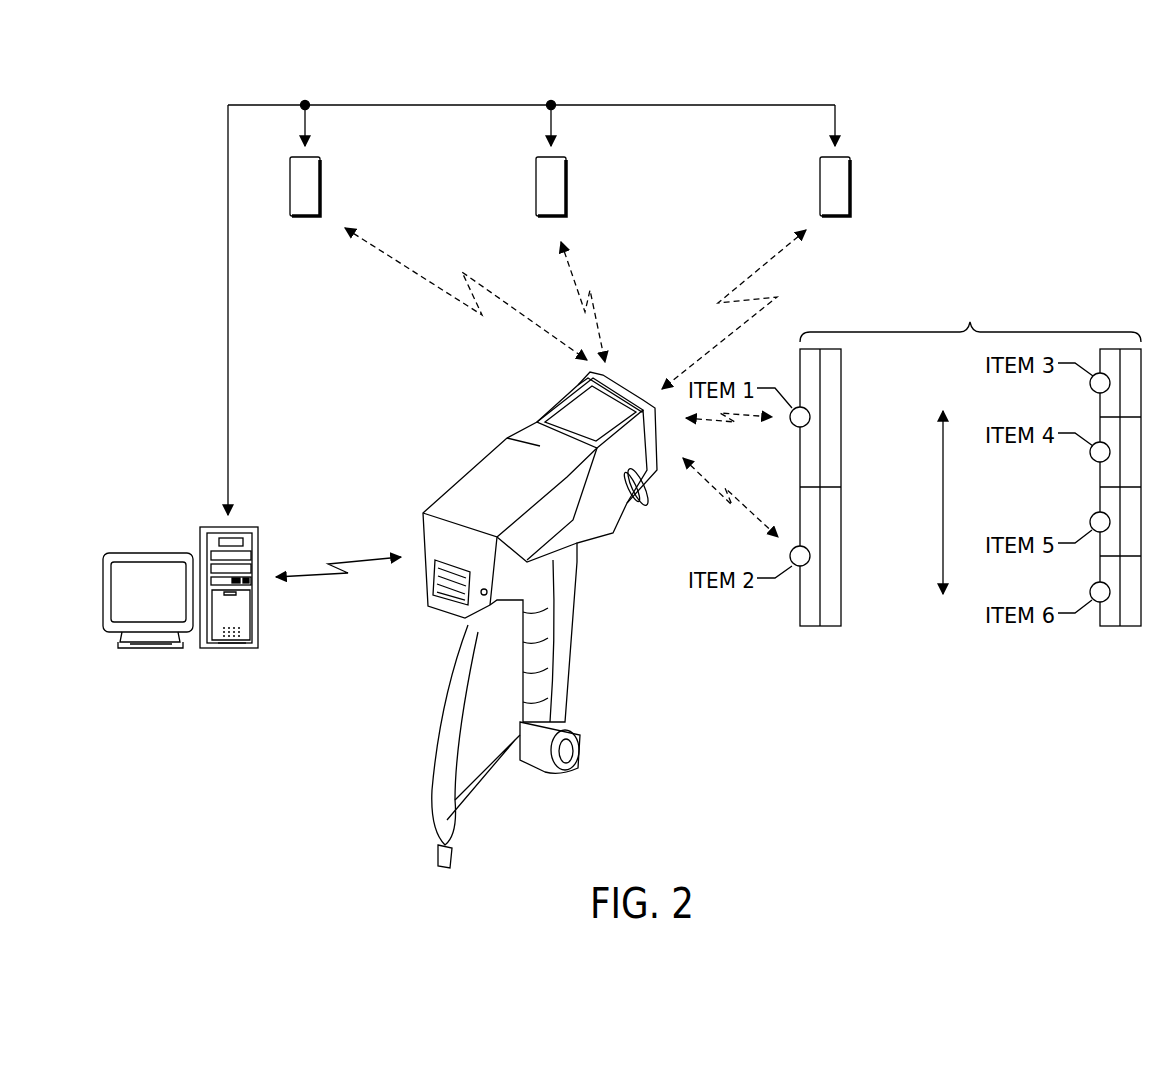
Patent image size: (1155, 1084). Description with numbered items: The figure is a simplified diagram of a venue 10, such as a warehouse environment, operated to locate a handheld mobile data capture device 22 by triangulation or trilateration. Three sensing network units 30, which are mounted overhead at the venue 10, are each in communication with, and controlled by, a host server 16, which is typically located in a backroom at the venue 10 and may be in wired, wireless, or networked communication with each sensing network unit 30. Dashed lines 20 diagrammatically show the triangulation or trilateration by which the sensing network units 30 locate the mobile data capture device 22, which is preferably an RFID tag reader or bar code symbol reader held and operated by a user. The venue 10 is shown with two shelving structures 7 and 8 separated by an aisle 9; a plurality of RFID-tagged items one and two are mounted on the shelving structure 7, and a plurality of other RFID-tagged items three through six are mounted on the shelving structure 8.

The sensing network unit 30 is at (290, 188).
The dashed lines 20 is at (405, 272).
The mobile data capture device 22 is at (618, 536).
The host server 16 is at (298, 683).
The venue 10 is at (1037, 313).
The aisle 9 is at (996, 513).
The shelving structure 7 is at (830, 346).
The shelving structure 8 is at (1112, 346).